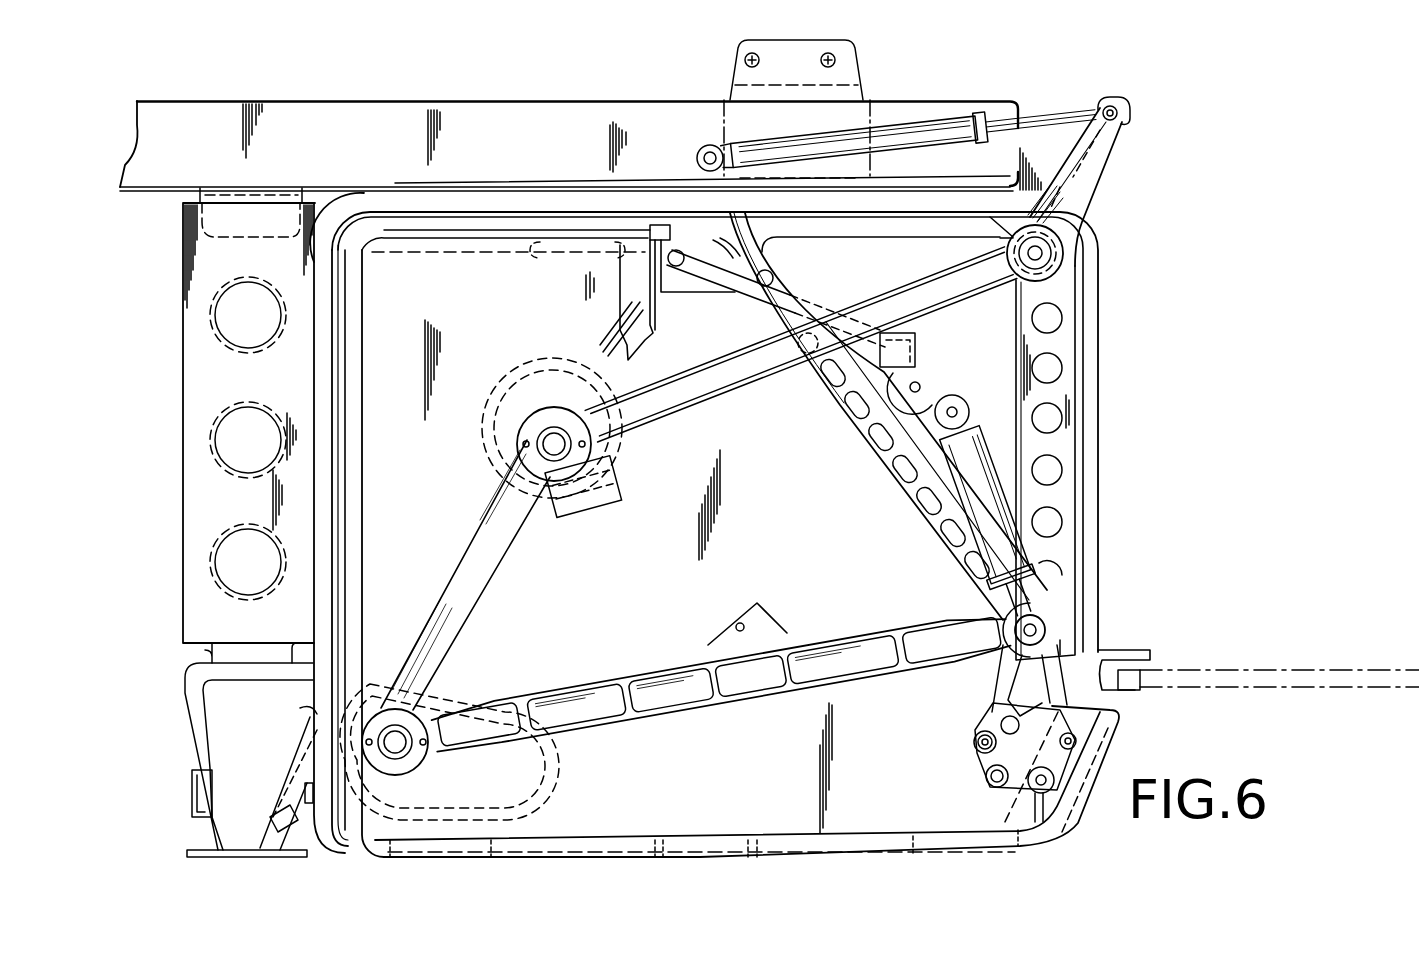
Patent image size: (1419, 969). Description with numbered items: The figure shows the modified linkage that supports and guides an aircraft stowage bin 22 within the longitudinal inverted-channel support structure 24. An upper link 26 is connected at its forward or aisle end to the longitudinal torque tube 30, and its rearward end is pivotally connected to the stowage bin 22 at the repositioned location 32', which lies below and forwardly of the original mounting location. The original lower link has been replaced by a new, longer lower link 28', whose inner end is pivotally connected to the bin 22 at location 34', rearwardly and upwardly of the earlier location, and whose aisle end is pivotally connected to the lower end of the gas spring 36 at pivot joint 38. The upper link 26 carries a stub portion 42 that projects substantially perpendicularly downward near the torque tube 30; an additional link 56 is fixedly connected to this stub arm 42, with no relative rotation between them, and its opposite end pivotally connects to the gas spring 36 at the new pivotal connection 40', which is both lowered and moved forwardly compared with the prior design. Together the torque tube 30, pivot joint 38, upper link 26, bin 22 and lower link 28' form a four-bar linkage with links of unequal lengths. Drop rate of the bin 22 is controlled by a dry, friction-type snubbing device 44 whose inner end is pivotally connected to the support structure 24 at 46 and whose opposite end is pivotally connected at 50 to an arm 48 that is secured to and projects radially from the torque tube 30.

The stowage bin 22 is at (797, 842).
The support structure 24 is at (386, 200).
The upper link 26 is at (749, 373).
The lower link 28' is at (730, 680).
The torque tube 30 is at (1048, 257).
The pivotal connection 32' is at (518, 437).
The pivotal connection 34' is at (575, 679).
The gas spring 36 is at (997, 492).
The pivotal connection 38 is at (1036, 630).
The pivotal connection 40' is at (1052, 438).
The stub portion 42 is at (920, 363).
The snubbing device 44 is at (950, 110).
The pivotal connection 46 is at (703, 148).
The arm 48 is at (1090, 163).
The pivotal connection 50 is at (1128, 108).
The additional link 56 is at (942, 395).